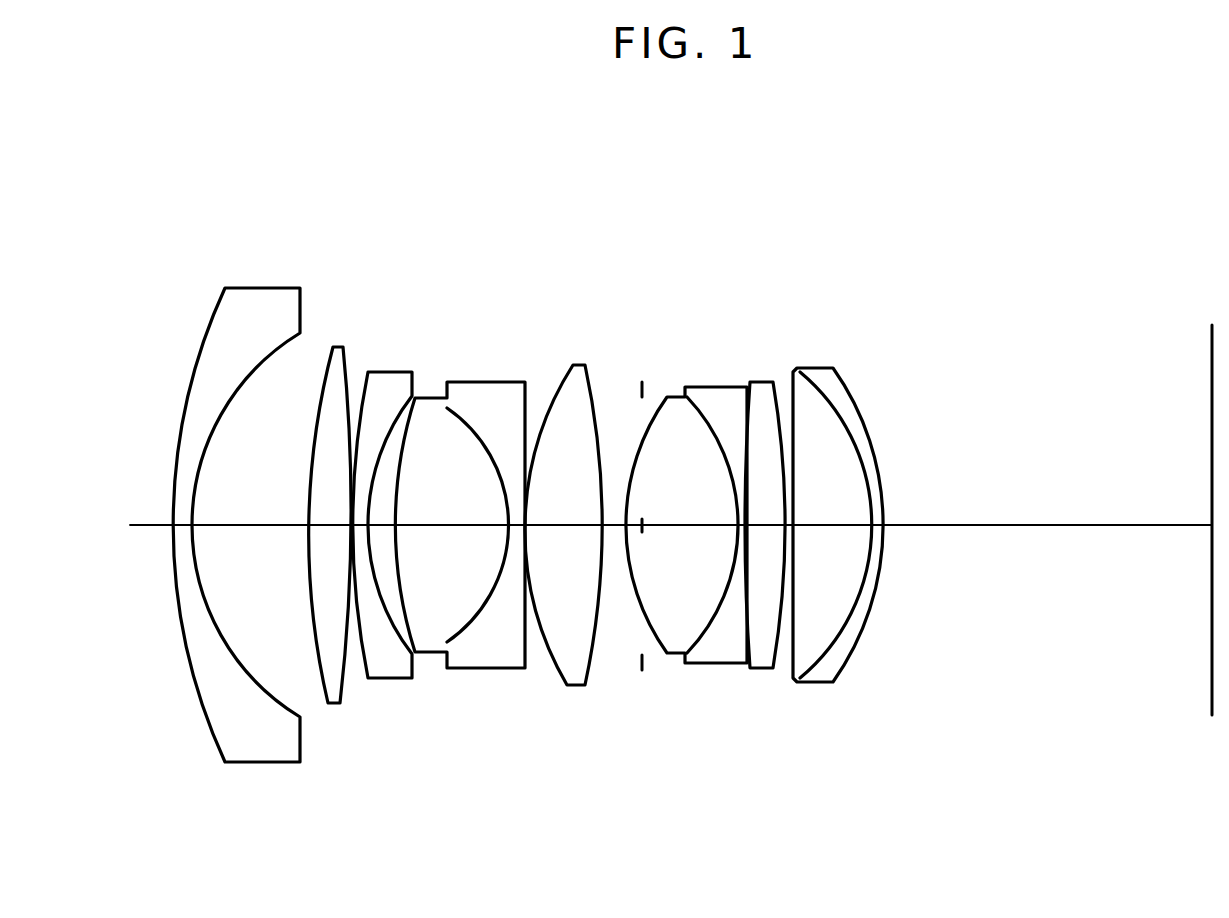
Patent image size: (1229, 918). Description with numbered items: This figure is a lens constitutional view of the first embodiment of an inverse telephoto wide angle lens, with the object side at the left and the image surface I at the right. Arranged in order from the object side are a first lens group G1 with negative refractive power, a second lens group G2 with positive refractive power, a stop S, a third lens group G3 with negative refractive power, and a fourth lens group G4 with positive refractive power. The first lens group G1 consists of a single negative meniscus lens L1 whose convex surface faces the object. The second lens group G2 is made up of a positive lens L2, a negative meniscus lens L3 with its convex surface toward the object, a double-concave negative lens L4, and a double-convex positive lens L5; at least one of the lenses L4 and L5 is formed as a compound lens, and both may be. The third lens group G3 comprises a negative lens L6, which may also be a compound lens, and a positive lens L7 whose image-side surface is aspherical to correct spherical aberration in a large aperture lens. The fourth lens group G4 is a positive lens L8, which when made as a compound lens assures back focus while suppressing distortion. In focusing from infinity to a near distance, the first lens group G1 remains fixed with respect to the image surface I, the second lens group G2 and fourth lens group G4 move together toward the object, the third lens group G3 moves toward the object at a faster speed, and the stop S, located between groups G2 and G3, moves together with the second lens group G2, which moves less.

The first lens group G1 is at (263, 210).
The negative meniscus lens L1 is at (265, 297).
The second lens group G2 is at (815, 712).
The positive lens L2 is at (340, 347).
The negative meniscus lens L3 is at (400, 370).
The double-concave negative lens L4 is at (532, 379).
The double-convex positive lens L5 is at (575, 365).
The stop S is at (641, 382).
The third lens group G3 is at (683, 728).
The negative lens L6 is at (743, 372).
The positive lens L7 is at (762, 382).
The fourth lens group G4 is at (785, 702).
The positive lens L8 is at (822, 343).
The image surface I is at (1211, 325).